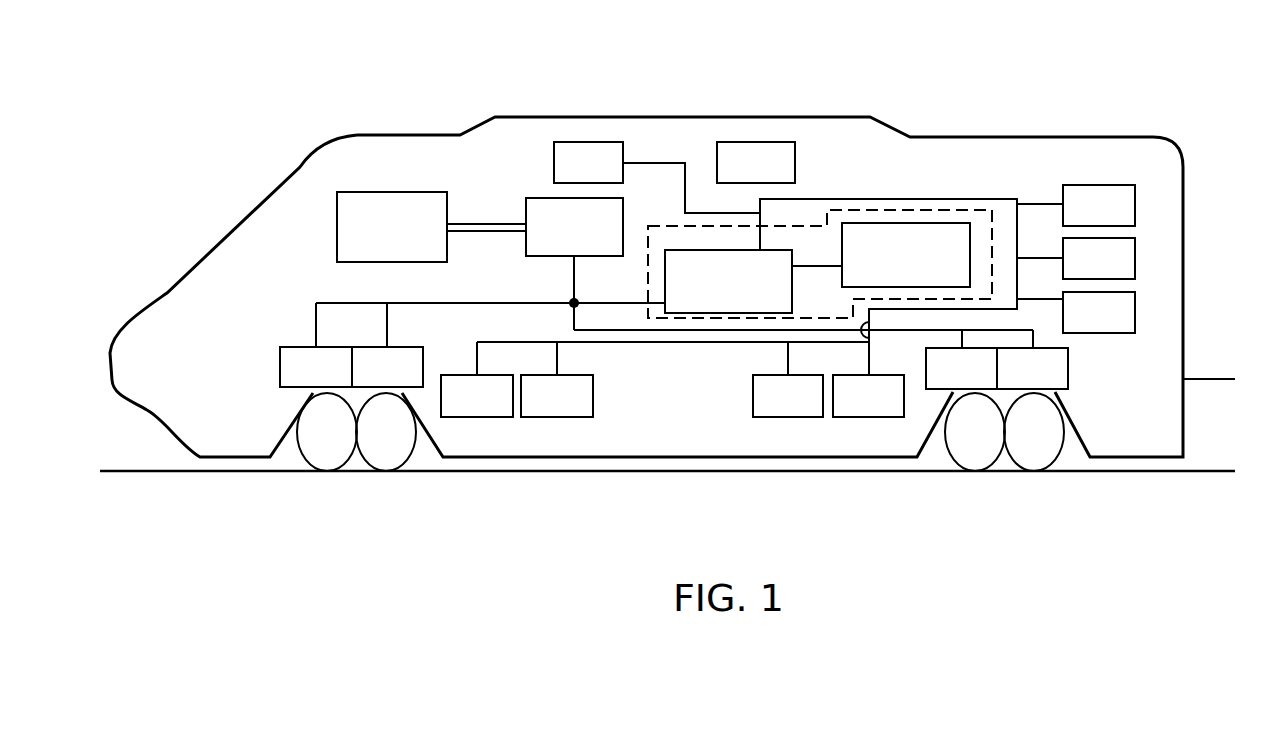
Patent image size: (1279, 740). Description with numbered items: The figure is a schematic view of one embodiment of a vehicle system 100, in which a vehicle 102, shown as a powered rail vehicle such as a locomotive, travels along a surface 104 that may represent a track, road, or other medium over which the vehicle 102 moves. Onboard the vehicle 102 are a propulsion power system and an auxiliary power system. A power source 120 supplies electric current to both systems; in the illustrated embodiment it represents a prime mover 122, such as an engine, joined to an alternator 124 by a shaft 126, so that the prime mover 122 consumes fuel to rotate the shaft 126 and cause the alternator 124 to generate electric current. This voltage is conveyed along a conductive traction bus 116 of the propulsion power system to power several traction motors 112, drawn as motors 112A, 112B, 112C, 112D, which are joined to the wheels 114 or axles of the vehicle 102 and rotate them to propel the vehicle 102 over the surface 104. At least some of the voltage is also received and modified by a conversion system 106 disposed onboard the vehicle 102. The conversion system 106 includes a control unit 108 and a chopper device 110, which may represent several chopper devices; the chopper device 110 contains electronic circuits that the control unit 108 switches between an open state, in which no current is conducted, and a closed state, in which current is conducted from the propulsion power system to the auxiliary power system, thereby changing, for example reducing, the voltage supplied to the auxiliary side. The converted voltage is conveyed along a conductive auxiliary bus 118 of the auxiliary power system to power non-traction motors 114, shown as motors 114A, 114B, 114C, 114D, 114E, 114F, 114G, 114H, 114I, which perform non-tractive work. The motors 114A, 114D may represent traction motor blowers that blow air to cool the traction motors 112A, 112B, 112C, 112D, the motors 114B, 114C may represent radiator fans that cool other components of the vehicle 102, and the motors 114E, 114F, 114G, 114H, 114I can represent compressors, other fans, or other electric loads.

The vehicle system 100 is at (1105, 70).
The vehicle 102 is at (1173, 142).
The surface 104 is at (1198, 473).
The conversion system 106 is at (808, 225).
The control unit 108 is at (885, 267).
The chopper device 110 is at (707, 296).
The traction motors 112 is at (277, 367).
The traction motor 112A is at (286, 382).
The traction motor 112B is at (358, 382).
The traction motor 112C is at (933, 383).
The traction motor 112D is at (1003, 383).
The wheels 114 is at (603, 398).
The non-traction motor 114A is at (447, 410).
The non-traction motor 114B is at (528, 410).
The non-traction motor 114C is at (759, 410).
The non-traction motor 114D is at (839, 410).
The non-traction motor 114E is at (1071, 326).
The non-traction motor 114F is at (1072, 272).
The non-traction motor 114G is at (1070, 219).
The non-traction motor 114H is at (727, 177).
The non-traction motor 114I is at (564, 177).
The traction bus 116 is at (495, 302).
The auxiliary bus 118 is at (710, 343).
The power source 120 is at (327, 233).
The prime mover 122 is at (371, 243).
The alternator 124 is at (553, 243).
The shaft 126 is at (493, 222).